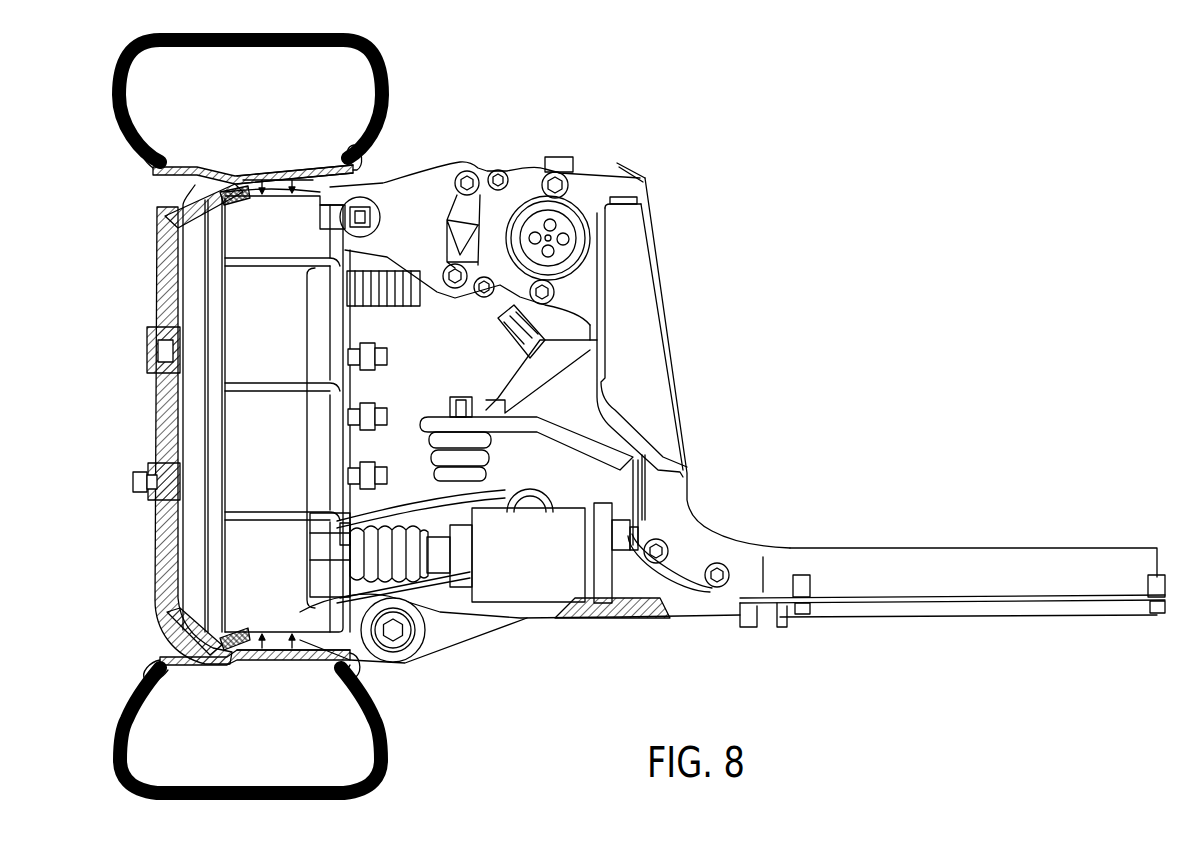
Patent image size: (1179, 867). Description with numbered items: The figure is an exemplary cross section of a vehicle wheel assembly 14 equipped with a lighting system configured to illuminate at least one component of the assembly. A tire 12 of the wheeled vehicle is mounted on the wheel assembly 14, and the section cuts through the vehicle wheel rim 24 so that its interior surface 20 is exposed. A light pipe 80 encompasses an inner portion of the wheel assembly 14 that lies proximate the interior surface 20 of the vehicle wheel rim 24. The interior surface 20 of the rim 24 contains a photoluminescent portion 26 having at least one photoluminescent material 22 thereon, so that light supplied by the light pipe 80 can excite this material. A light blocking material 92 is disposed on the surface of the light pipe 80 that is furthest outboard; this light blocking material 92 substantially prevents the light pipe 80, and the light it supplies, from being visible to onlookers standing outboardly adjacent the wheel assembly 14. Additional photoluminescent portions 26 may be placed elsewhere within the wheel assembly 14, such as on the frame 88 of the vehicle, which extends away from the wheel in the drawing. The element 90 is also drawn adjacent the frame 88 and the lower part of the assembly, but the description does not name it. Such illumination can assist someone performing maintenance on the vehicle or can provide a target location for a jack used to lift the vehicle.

The tire 12 is at (256, 804).
The wheel assembly 14 is at (130, 191).
The interior surface 20 is at (345, 650).
The photoluminescent material 22 is at (270, 662).
The vehicle wheel rim 24 is at (158, 268).
The photoluminescent portion 26 is at (314, 158).
The light pipe 80 is at (338, 186).
The frame 88 is at (908, 558).
The bushing 90 is at (622, 626).
The light blocking material 92 is at (218, 190).